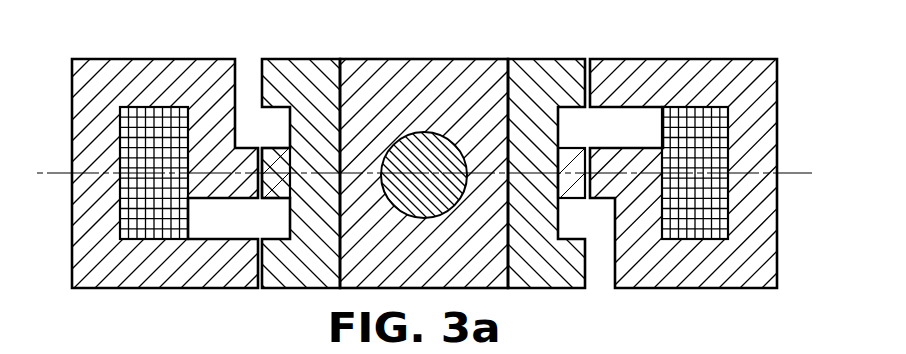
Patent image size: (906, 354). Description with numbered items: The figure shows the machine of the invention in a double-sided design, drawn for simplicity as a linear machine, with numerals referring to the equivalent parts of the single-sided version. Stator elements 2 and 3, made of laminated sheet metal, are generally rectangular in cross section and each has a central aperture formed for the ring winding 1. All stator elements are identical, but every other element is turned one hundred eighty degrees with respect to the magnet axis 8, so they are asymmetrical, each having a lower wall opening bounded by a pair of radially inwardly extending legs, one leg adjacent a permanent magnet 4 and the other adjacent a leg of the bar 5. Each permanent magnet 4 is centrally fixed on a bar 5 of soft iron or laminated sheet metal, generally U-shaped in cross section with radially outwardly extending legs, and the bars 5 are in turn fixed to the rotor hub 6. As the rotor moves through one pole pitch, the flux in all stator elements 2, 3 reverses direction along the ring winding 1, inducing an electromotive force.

The ring winding 1 is at (148, 120).
The stator element 2 is at (765, 88).
The stator element 3 is at (90, 122).
The permanent magnet 4 is at (280, 150).
The bar 5 is at (303, 70).
The rotor hub 6 is at (478, 70).
The magnet axis 8 is at (218, 178).